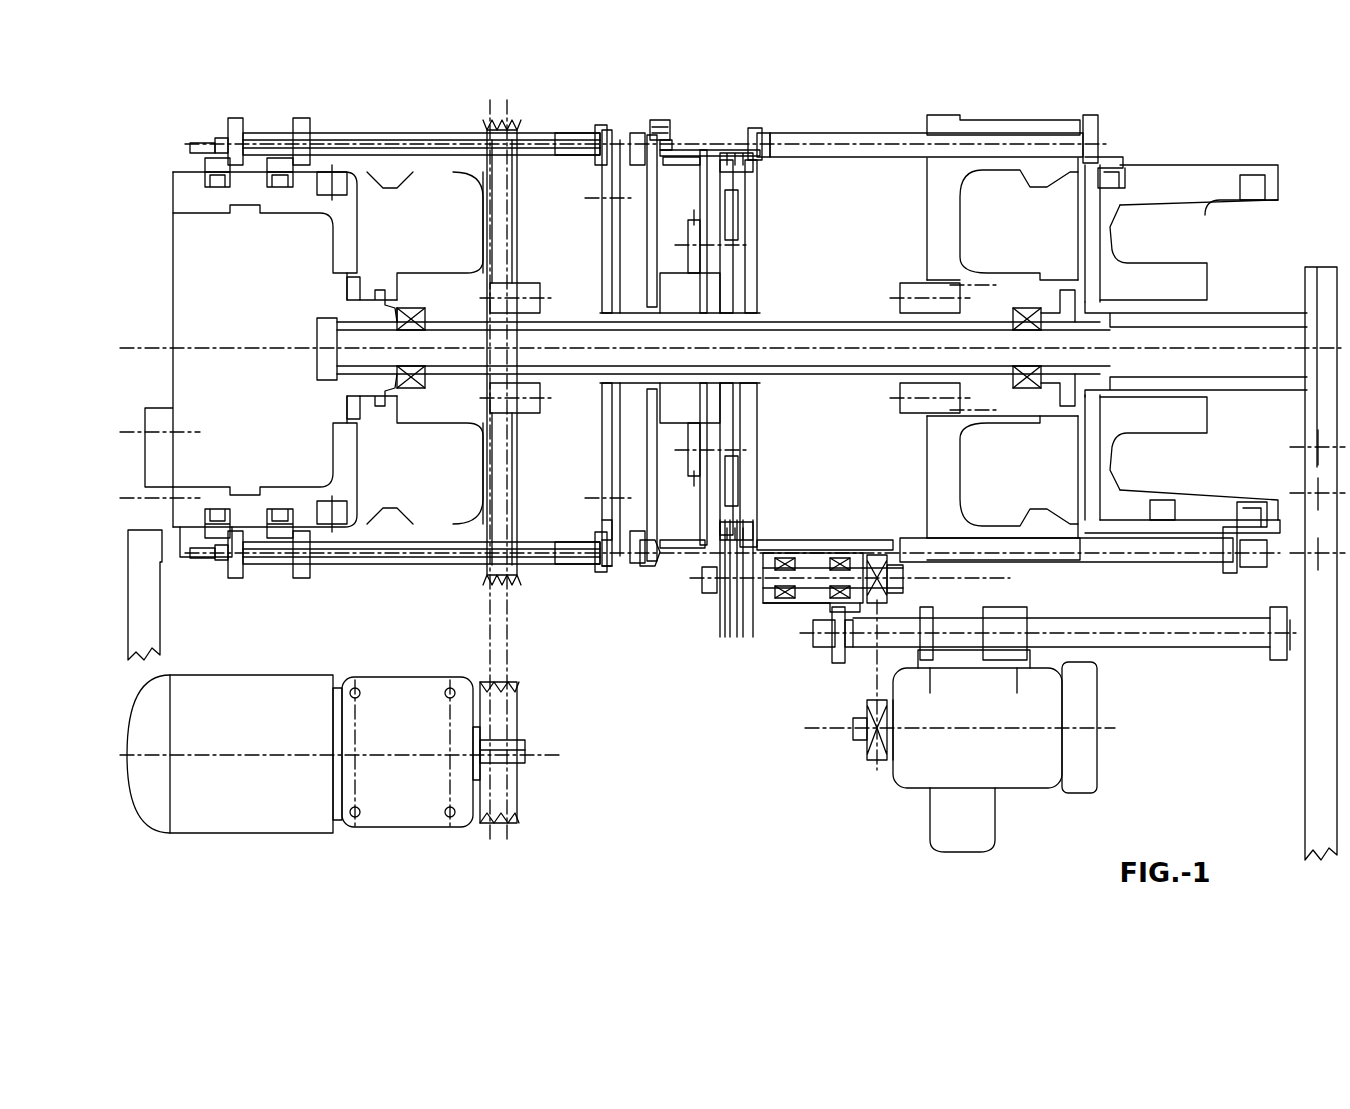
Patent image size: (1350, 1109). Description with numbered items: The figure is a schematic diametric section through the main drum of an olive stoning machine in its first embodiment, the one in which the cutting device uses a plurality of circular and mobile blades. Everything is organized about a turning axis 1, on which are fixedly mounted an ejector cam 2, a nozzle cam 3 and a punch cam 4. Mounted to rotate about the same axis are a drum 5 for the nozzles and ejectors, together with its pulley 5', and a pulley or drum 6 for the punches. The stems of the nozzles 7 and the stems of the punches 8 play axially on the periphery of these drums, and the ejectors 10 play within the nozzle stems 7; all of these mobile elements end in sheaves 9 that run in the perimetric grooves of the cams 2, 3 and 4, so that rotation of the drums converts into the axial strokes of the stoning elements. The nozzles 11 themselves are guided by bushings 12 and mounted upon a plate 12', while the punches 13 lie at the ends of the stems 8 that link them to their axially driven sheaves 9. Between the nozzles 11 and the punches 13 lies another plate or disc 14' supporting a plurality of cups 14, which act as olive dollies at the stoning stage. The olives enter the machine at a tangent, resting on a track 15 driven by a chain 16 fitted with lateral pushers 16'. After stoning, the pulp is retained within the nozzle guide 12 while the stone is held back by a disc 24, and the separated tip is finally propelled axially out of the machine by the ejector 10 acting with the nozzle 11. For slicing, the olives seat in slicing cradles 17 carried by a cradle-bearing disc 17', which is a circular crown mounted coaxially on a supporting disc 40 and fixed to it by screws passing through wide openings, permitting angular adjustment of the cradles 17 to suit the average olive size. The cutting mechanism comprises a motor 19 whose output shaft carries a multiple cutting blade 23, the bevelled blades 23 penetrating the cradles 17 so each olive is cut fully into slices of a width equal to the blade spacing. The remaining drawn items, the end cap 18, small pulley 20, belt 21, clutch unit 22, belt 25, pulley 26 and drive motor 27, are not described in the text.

The turning axis 1 is at (122, 348).
The ejector cam 2 is at (185, 186).
The nozzle cam 3 is at (300, 128).
The punch cam 4 is at (1220, 178).
The drum for the nozzles and ejectors 5 is at (471, 299).
The pulley 5' is at (487, 304).
The pulley or drum for the punches 6 is at (1010, 126).
The stems of the nozzles 7 is at (348, 130).
The stems of the punches 8 is at (898, 128).
The sheaves 9 is at (203, 200).
The ejectors 10 is at (272, 148).
The nozzles 11 is at (562, 126).
The bushings 12 is at (666, 294).
The plate 12' is at (598, 348).
The punches 13 is at (633, 127).
The cups 14 is at (661, 342).
The plate or disc 14' is at (704, 86).
The track 15 is at (700, 128).
The chain 16 is at (752, 284).
The lateral pushers 16' is at (700, 553).
The slicing cradles 17 is at (780, 346).
The cradle-bearing disc 17' is at (787, 348).
The end cap 18 is at (196, 146).
The motor 19 is at (1037, 770).
The motor pulley 20 is at (877, 743).
The belt 21 is at (877, 687).
The clutch unit 22 is at (885, 604).
The multiple cutting blade 23 is at (750, 643).
The disc 24 is at (617, 557).
The belt 25 is at (490, 640).
The motor pulley 26 is at (498, 803).
The drive motor 27 is at (222, 805).
The supporting disc 40 is at (750, 420).